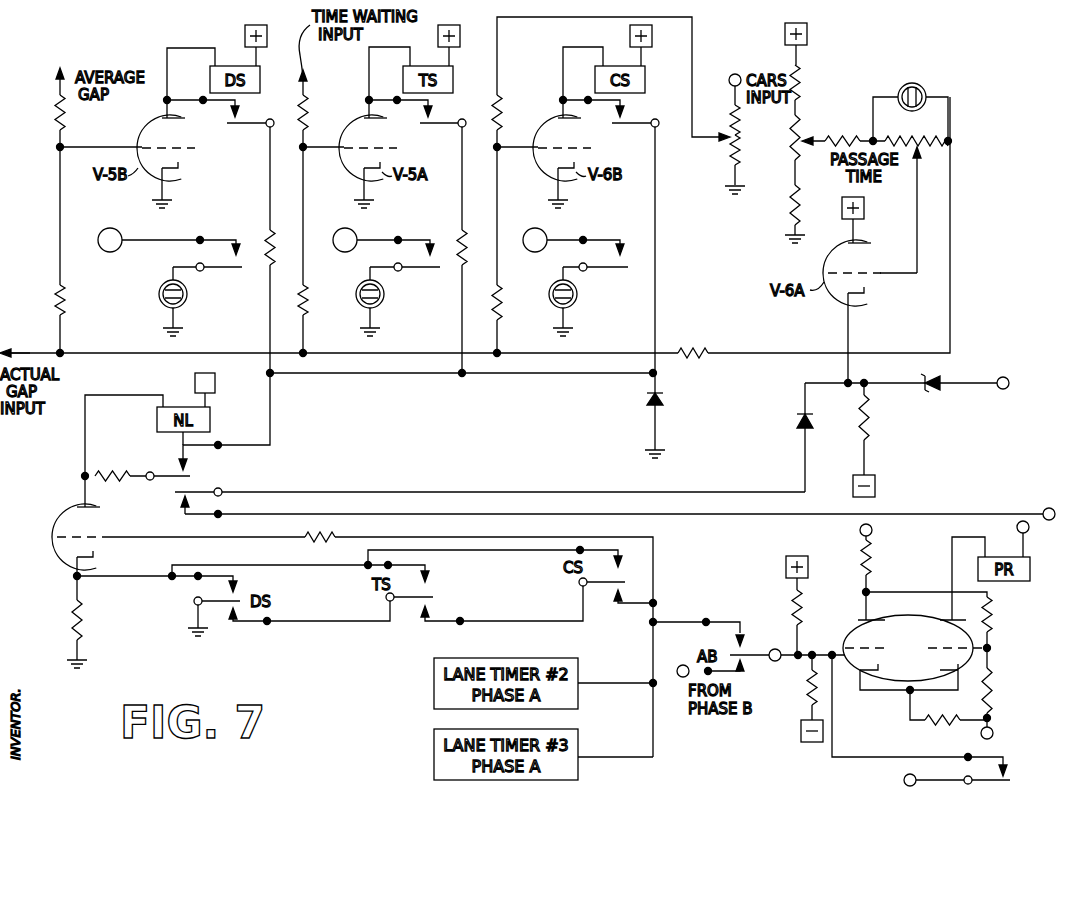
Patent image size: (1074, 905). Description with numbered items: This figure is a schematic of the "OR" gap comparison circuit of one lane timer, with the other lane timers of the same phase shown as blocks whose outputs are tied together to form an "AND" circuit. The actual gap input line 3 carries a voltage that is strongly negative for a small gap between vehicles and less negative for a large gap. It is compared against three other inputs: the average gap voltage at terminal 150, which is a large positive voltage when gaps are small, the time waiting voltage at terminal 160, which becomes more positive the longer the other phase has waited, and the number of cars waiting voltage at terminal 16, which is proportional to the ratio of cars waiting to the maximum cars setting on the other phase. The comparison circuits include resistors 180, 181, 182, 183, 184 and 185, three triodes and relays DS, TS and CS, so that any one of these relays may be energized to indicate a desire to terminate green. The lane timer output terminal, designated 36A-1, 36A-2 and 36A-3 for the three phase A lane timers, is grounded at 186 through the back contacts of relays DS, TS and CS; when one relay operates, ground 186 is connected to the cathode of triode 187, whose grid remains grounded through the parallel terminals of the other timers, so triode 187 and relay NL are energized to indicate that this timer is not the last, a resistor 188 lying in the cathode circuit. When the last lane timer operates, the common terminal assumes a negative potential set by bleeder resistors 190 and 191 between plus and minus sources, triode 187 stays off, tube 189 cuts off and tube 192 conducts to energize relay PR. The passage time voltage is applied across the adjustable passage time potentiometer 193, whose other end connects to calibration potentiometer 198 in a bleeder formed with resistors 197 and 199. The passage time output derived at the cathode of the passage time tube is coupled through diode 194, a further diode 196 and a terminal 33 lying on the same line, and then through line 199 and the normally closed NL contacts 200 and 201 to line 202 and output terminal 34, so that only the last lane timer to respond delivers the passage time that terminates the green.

The actual gap input line 3 is at (15, 342).
The number of cars waiting input terminal 16 is at (732, 68).
The output terminal 33 is at (1000, 396).
The passage time output terminal 34 is at (1046, 501).
The average gap input terminal 150 is at (52, 78).
The time waiting input terminal 160 is at (304, 79).
The comparison circuit resistor 180 is at (54, 113).
The comparison circuit resistor 181 is at (66, 300).
The comparison circuit resistor 182 is at (304, 104).
The comparison circuit resistor 183 is at (310, 300).
The comparison circuit resistor 184 is at (499, 104).
The comparison circuit resistor 185 is at (505, 300).
The ground 186 is at (192, 611).
The triode 187 is at (70, 512).
The resistor 188 is at (80, 618).
The tube 189 is at (856, 624).
The bleeder resistor 190 is at (796, 600).
The bleeder resistor 191 is at (808, 686).
The tube 192 is at (976, 633).
The passage time potentiometer 193 is at (940, 148).
The diode 194 is at (794, 425).
The diode 196 is at (931, 388).
The bleeder resistor 197 is at (798, 72).
The calibration potentiometer 198 is at (798, 122).
The bleeder resistor and passage time line 199 is at (788, 205).
The NOT LAST contact 200 is at (202, 490).
The NOT LAST contact 201 is at (182, 513).
The output line 202 is at (382, 515).
The lane timer output terminal 36A-1 is at (656, 603).
The lane timer output terminal 36A-2 is at (612, 678).
The lane timer output terminal 36A-3 is at (612, 752).